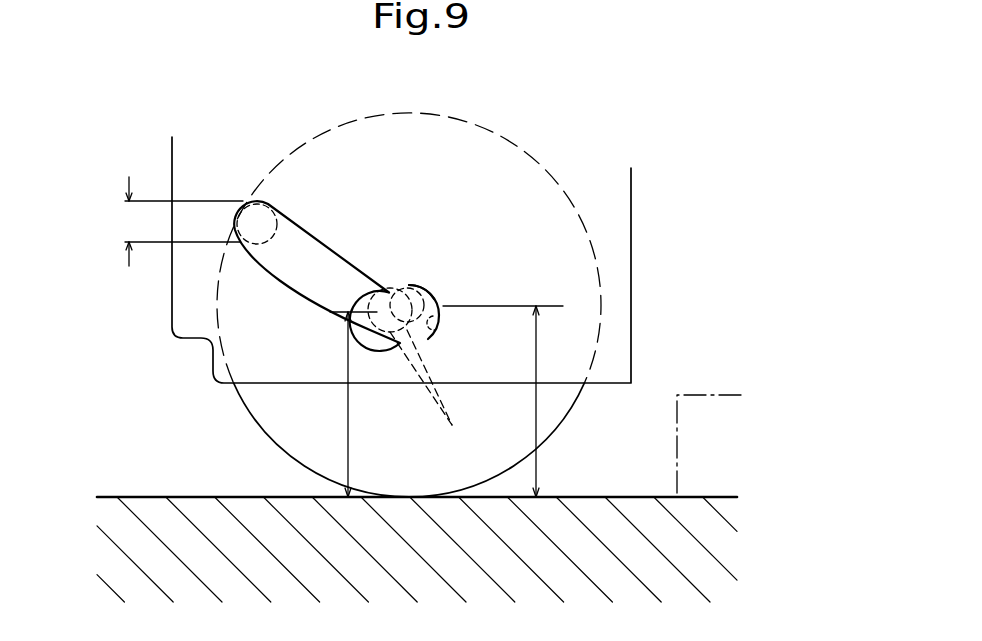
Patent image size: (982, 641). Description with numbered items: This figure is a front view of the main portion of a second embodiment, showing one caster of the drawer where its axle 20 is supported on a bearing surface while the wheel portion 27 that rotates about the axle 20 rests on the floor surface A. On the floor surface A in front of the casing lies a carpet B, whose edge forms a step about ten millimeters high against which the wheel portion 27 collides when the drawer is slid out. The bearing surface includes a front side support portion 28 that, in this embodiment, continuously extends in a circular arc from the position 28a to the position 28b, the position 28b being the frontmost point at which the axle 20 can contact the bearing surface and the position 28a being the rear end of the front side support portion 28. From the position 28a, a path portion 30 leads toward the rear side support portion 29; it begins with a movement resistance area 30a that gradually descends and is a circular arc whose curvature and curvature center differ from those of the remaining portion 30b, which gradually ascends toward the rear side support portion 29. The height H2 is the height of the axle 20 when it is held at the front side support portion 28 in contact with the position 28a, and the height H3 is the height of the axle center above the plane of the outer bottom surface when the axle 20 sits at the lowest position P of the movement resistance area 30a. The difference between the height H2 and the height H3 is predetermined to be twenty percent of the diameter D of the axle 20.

The axle 20 is at (436, 388).
The wheel portion 27 is at (287, 402).
The front side support portion 28 is at (440, 302).
The position 28a is at (422, 283).
The position 28b is at (436, 326).
The rear side support portion 29 is at (253, 201).
The path portion 30 is at (420, 197).
The movement resistance area 30a is at (404, 287).
The remaining portion 30b is at (365, 289).
The lowest position P is at (377, 305).
The diameter D is at (175, 221).
The height H3 is at (347, 370).
The height H2 is at (537, 358).
The floor surface A is at (622, 496).
The carpet B is at (698, 420).